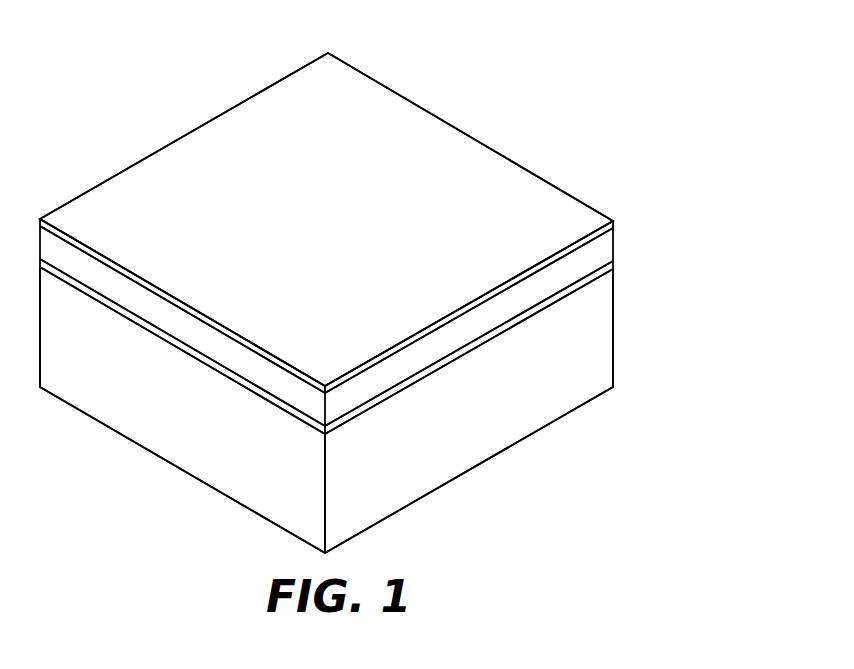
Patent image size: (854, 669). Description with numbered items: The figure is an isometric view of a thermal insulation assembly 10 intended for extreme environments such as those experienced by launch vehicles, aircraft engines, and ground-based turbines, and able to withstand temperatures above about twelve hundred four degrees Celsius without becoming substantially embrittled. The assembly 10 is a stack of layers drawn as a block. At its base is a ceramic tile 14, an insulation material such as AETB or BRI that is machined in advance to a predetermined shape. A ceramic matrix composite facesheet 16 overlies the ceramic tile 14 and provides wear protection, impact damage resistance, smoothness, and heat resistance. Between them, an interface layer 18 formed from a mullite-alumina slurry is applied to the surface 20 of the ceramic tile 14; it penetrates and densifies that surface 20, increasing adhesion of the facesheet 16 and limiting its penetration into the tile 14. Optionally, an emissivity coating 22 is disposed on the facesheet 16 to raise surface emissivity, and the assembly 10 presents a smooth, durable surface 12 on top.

The thermal insulation assembly 10 is at (517, 67).
The surface 12 is at (266, 122).
The ceramic tile 14 is at (615, 362).
The ceramic matrix composite facesheet 16 is at (615, 243).
The interface layer 18 is at (615, 262).
The surface of ceramic tile 20 is at (588, 280).
The emissivity coating 22 is at (613, 222).